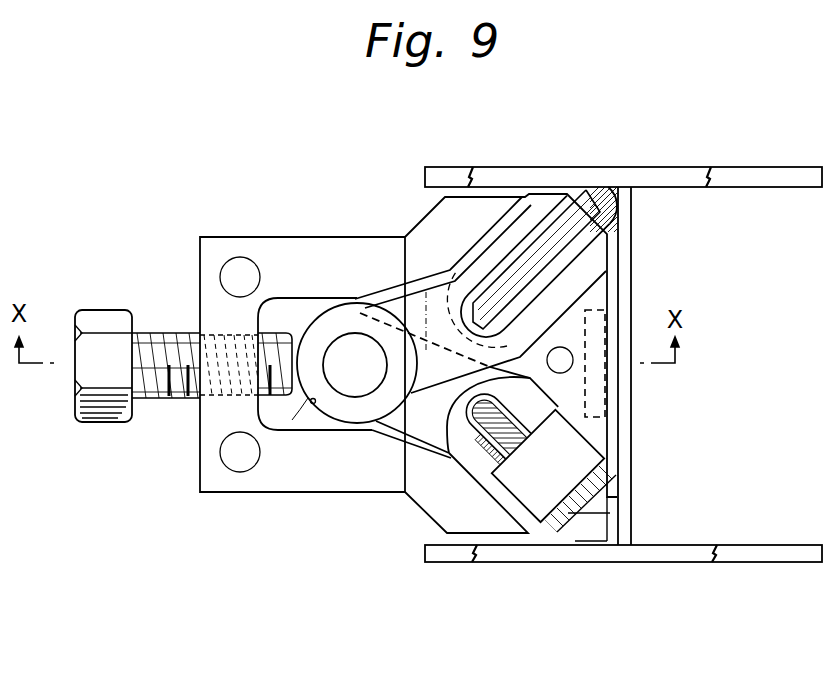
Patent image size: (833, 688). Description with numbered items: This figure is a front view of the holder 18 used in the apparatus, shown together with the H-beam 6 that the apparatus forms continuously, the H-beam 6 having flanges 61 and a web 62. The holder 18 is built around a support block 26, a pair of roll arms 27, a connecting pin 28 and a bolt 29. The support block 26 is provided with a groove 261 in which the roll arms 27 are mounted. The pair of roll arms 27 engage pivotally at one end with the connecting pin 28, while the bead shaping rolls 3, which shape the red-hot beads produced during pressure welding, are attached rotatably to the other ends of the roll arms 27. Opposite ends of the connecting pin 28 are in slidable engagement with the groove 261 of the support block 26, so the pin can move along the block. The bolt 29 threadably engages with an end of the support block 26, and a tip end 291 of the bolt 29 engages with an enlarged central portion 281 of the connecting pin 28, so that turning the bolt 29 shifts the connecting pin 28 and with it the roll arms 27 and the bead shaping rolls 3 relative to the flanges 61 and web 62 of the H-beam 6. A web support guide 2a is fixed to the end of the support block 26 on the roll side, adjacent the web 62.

The holder 18 is at (209, 507).
The H-beam 6 is at (733, 232).
The flanges 61 is at (775, 169).
The web 62 is at (631, 268).
The support block 26 is at (340, 486).
The roll arms 27 is at (408, 302).
The connecting pin 28 is at (346, 338).
The bolt 29 is at (106, 421).
The tip end 291 is at (274, 338).
The enlarged central portion 281 is at (313, 403).
The groove 261 is at (478, 244).
The bead shaping rolls 3 is at (618, 214).
The web support guide 2a is at (618, 405).